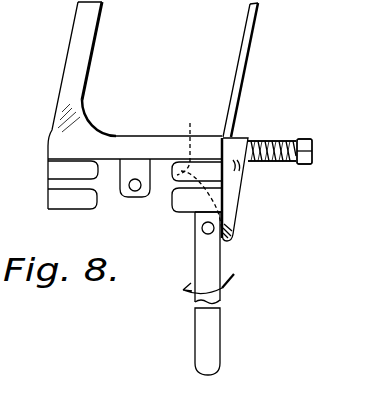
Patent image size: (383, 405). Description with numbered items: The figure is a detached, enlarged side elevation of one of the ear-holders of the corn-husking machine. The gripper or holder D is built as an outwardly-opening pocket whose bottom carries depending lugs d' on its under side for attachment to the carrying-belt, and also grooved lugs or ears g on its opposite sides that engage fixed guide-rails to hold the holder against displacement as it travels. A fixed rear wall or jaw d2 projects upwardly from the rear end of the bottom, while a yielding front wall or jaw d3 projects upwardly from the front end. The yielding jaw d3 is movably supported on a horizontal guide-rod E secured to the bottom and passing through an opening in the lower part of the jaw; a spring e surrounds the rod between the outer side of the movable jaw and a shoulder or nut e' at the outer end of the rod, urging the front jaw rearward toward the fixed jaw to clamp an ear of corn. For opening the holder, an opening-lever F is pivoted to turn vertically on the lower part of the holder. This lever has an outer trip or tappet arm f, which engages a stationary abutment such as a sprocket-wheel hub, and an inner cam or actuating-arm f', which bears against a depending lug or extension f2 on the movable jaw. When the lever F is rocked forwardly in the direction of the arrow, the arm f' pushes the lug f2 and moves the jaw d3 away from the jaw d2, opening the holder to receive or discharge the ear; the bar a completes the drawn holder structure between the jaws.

The fixed rear wall or jaw d2 is at (77, 50).
The yielding front wall or jaw d3 is at (258, 70).
The gripper or holder D is at (163, 89).
The cross bar a is at (128, 142).
The grooved lugs or ears g is at (51, 186).
The depending lugs d' is at (135, 191).
The inner cam or actuating-arm f' is at (199, 168).
The depending lug or extension f2 is at (230, 212).
The opening-lever F is at (184, 245).
The outer trip or tappet arm f is at (208, 324).
The horizontal guide-rod E is at (268, 136).
The spring e is at (272, 163).
The shoulder or nut e' is at (317, 151).